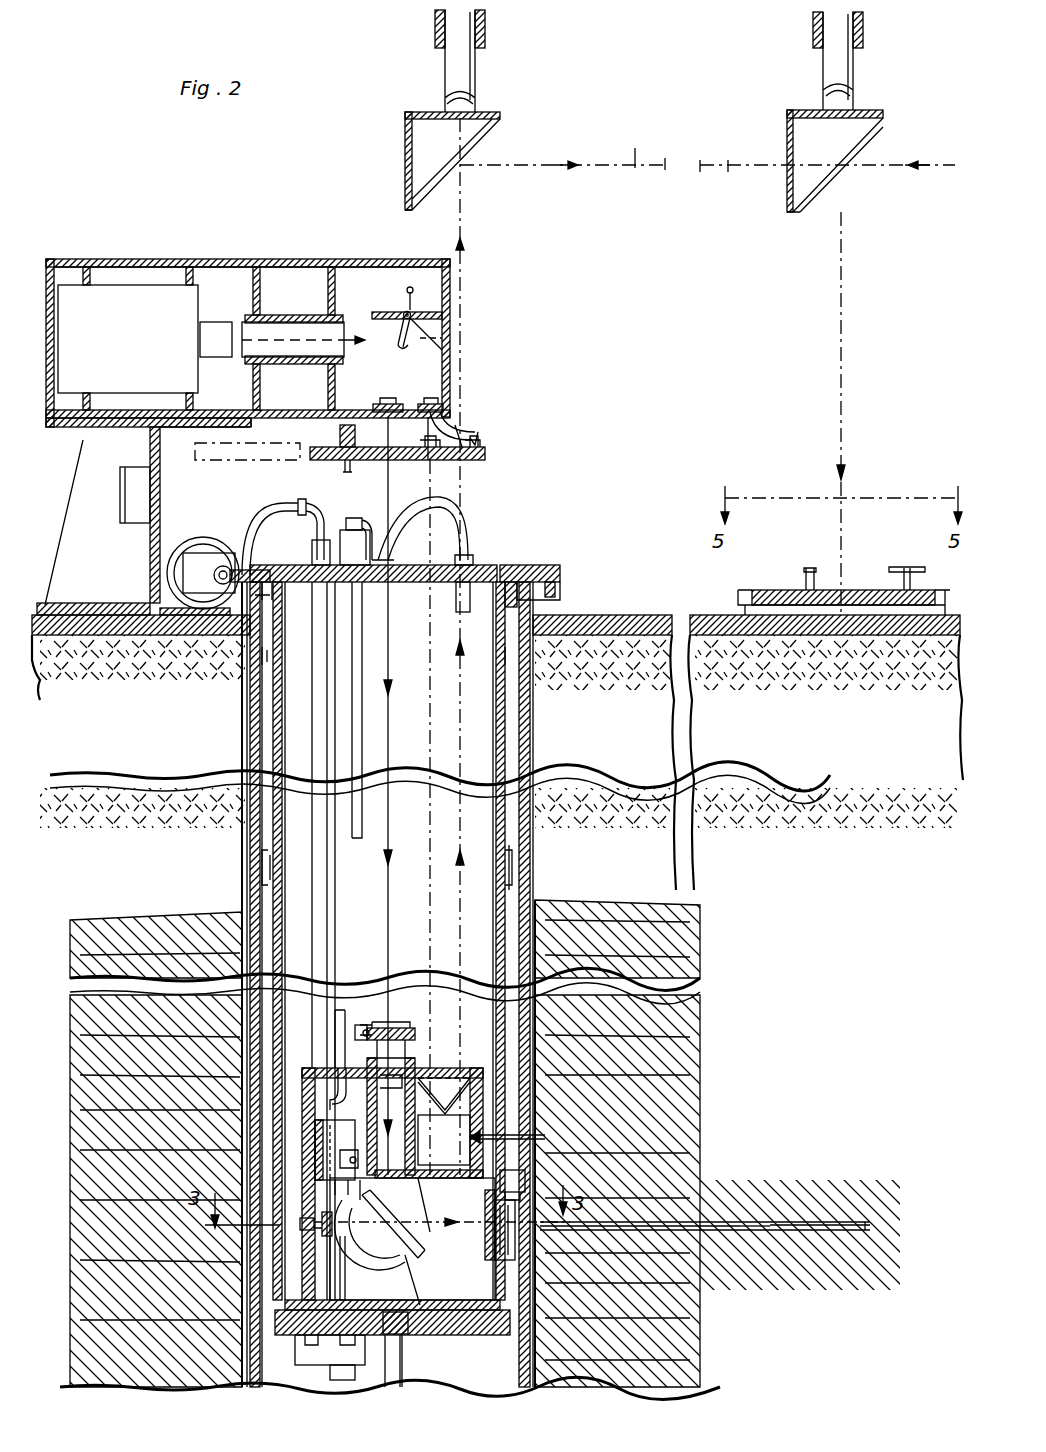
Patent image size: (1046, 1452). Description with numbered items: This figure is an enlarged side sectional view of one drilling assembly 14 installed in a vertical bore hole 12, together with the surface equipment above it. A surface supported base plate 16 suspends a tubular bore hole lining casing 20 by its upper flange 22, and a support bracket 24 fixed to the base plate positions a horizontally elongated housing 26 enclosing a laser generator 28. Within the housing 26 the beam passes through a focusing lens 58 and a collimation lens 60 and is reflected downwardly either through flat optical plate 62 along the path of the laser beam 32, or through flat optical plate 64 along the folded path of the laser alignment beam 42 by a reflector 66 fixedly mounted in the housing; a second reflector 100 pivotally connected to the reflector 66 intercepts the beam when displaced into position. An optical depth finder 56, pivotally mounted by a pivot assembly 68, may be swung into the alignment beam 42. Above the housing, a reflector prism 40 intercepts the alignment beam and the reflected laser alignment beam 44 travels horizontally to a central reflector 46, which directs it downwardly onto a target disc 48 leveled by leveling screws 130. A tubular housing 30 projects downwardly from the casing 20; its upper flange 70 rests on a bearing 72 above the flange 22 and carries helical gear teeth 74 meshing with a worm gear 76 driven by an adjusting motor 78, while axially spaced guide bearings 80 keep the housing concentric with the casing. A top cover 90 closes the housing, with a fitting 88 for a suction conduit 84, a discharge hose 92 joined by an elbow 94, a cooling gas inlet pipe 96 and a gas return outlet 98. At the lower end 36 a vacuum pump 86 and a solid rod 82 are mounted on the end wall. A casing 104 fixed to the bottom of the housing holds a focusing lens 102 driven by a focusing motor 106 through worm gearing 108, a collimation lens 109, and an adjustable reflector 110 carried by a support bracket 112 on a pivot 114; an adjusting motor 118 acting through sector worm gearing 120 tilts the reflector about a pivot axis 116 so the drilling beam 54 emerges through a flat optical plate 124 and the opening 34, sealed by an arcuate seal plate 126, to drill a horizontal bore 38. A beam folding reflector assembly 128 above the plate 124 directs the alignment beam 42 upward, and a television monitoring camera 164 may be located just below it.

The vertical bore holes 12 is at (535, 965).
The drilling assembly 14 is at (584, 328).
The base plate 16 is at (615, 615).
The bore hole lining casing 20 is at (530, 718).
The upper flange 22 is at (562, 600).
The support bracket 24 is at (80, 490).
The housing 26 is at (175, 262).
The laser generator 28 is at (128, 300).
The tubular housing 30 is at (505, 948).
The laser beam 32 is at (428, 712).
The opening 34 is at (515, 1250).
The lower end 36 is at (510, 1330).
The horizontal bore 38 is at (712, 1220).
The reflector prism 40 is at (470, 140).
The laser alignment beam 42 is at (468, 950).
The reflected laser alignment beam 44 is at (562, 145).
The central reflector 46 is at (790, 180).
The target disc 48 is at (782, 592).
The drilling beam 54 is at (800, 1230).
The optical depth finder 56 is at (502, 452).
The focusing lens 58 is at (217, 325).
The collimation lens 60 is at (298, 325).
The flat optical plate 62 is at (390, 404).
The flat optical plate 64 is at (455, 404).
The reflector 66 is at (425, 318).
The pivot assembly 68 is at (310, 440).
The upper flange 70 is at (505, 568).
The bearing 72 is at (540, 565).
The helical gear teeth 74 is at (560, 582).
The worm gear 76 is at (215, 575).
The adjusting motor 78 is at (195, 540).
The guide bearings 80 is at (512, 862).
The solid rod 82 is at (403, 1365).
The suction conduit 84 is at (320, 912).
The vacuum pump 86 is at (295, 1348).
The fitting 88 is at (265, 600).
The top cover 90 is at (475, 555).
The discharge hose 92 is at (260, 540).
The elbow 94 is at (356, 518).
The inlet pipe 96 is at (362, 650).
The gas return outlet 98 is at (463, 612).
The second reflector 100 is at (388, 280).
The focusing lens 102 is at (405, 1048).
The casing 104 is at (302, 1090).
The focusing motor 106 is at (350, 1005).
The worm gearing 108 is at (395, 1020).
The collimation lens 109 is at (430, 1075).
The adjustable reflector 110 is at (425, 1280).
The support bracket 112 is at (315, 1155).
The pivot 114 is at (300, 1226).
The pivot axis 116 is at (410, 1185).
The adjusting motor 118 is at (320, 1140).
The sector worm gearing 120 is at (330, 1255).
The flat optical plate 124 is at (530, 1175).
The arcuate seal plate 126 is at (540, 1298).
The beam folding reflector assembly 128 is at (510, 1115).
The leveling screws 130 is at (907, 565).
The television monitoring camera 164 is at (444, 1140).